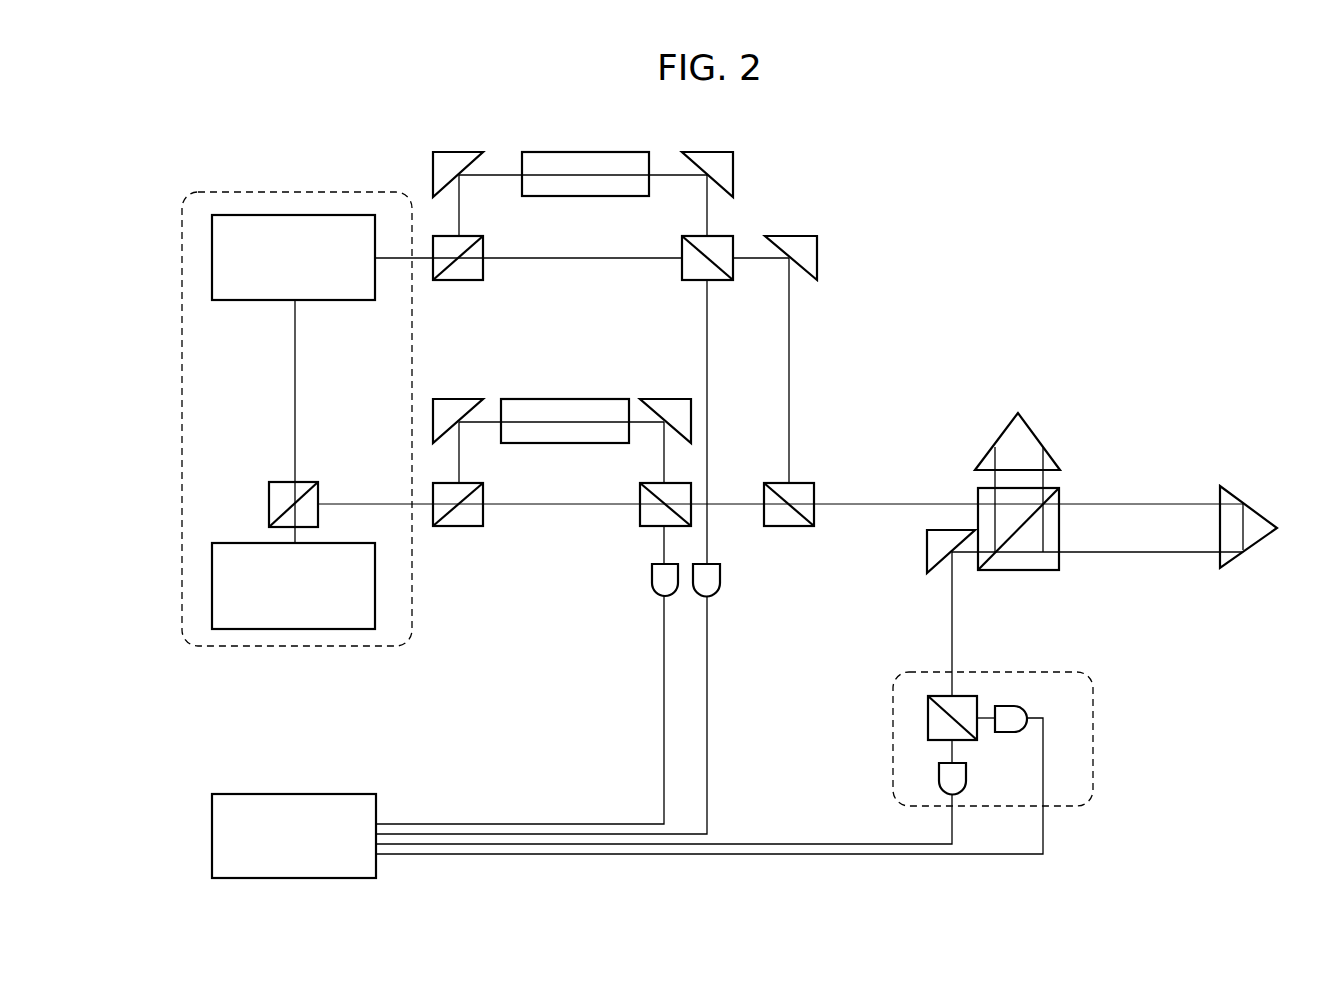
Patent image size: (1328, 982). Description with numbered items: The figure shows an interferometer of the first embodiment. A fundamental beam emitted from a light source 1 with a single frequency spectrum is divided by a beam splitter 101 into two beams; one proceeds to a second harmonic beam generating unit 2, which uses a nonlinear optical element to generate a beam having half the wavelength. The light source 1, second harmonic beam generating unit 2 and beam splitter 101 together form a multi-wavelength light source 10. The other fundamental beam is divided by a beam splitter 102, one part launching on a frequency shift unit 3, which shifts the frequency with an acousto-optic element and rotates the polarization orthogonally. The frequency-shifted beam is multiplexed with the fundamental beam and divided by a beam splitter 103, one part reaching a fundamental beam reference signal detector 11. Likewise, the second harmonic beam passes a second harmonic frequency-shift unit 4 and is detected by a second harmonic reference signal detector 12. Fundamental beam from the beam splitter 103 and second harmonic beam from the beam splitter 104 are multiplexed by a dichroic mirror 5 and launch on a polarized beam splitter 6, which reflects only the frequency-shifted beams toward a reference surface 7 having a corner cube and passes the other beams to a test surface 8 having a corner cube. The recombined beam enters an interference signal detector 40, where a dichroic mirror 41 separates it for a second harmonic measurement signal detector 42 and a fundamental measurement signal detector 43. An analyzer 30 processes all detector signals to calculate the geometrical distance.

The light source 1 is at (228, 543).
The second harmonic beam generating unit 2 is at (232, 215).
The frequency shift unit 3 is at (545, 432).
The second harmonic frequency-shift unit 4 is at (590, 175).
The dichroic mirror 5 is at (810, 484).
The polarized beam splitter 6 is at (1058, 490).
The reference surface 7 is at (1020, 443).
The test surface 8 is at (1240, 492).
The multi-wavelength light source 10 is at (300, 192).
The fundamental beam reference signal detector 11 is at (660, 598).
The second harmonic reference signal detector 12 is at (715, 598).
The analyzer 30 is at (258, 794).
The interference signal detector 40 is at (925, 672).
The dichroic mirror 41 is at (965, 696).
The second harmonic measurement signal detector 42 is at (1018, 706).
The fundamental measurement signal detector 43 is at (940, 775).
The beam splitter 101 is at (278, 482).
The beam splitter 102 is at (478, 507).
The beam splitter 103 is at (650, 513).
The beam splitter 104 is at (722, 236).